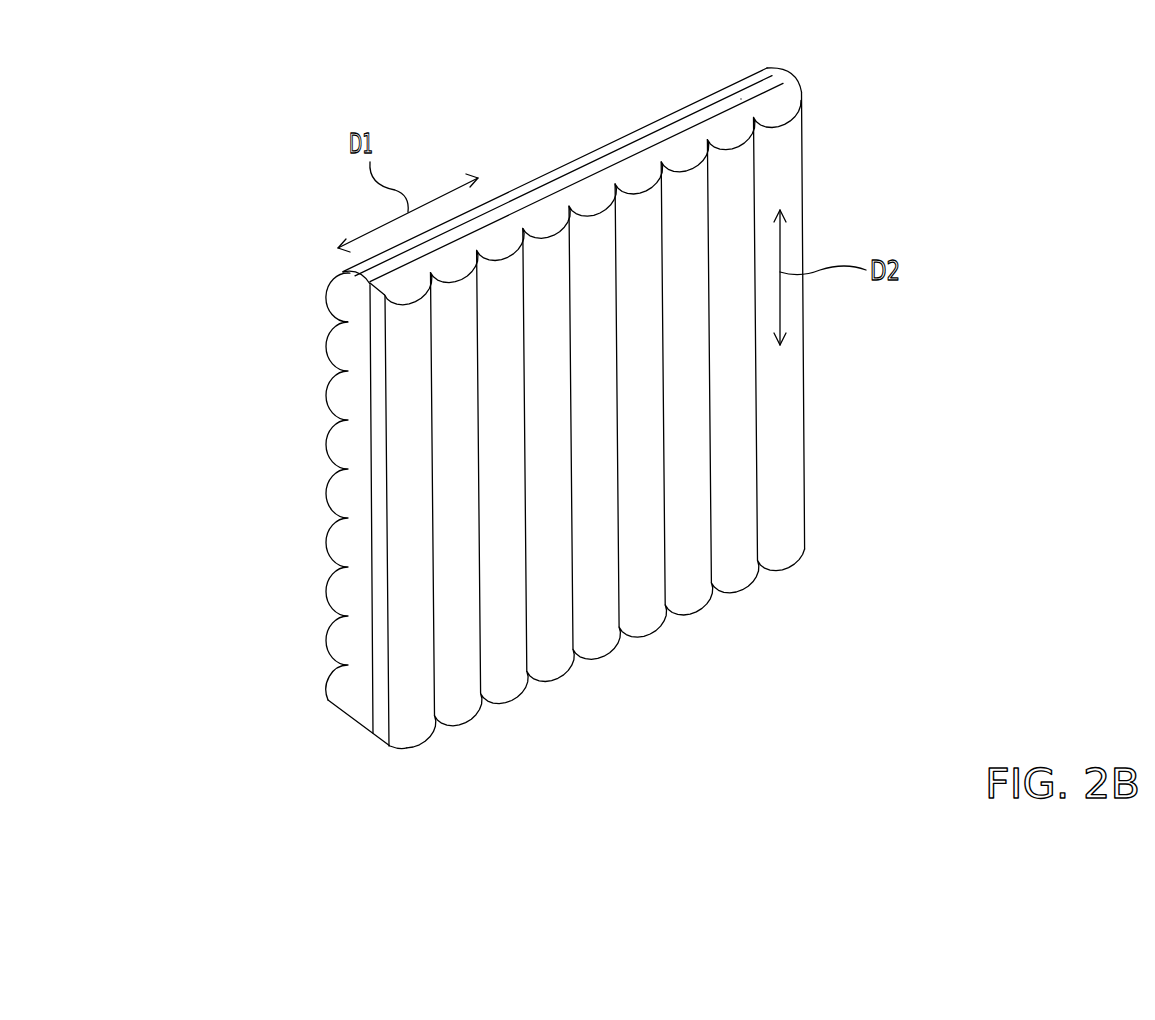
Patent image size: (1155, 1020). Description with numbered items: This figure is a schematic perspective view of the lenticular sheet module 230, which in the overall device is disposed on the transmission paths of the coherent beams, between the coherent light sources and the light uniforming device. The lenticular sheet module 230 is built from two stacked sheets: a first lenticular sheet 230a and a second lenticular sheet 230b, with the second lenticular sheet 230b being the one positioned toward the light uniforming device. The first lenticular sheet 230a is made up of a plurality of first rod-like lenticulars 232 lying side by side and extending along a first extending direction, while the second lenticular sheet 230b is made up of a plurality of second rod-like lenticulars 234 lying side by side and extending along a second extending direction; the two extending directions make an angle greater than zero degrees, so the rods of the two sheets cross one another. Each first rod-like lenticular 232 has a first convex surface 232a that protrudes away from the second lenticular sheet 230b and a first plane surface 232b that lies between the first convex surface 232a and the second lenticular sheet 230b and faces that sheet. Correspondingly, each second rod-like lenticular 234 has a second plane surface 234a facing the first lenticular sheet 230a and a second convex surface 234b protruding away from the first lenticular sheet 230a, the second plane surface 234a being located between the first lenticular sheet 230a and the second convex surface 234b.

The lenticular sheet module 230 is at (1012, 723).
The first lenticular sheet 230a is at (772, 78).
The second lenticular sheet 230b is at (782, 110).
The first rod-like lenticulars 232 is at (337, 295).
The first convex surface 232a is at (330, 592).
The first plane surface 232b is at (387, 656).
The second rod-like lenticulars 234 is at (787, 553).
The second plane surface 234a is at (741, 99).
The second convex surface 234b is at (739, 147).